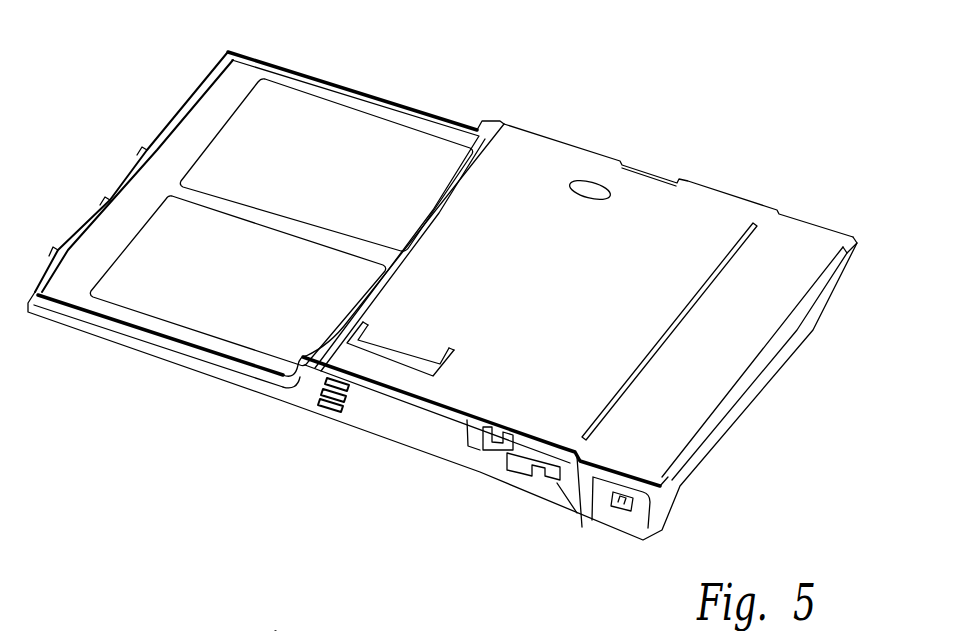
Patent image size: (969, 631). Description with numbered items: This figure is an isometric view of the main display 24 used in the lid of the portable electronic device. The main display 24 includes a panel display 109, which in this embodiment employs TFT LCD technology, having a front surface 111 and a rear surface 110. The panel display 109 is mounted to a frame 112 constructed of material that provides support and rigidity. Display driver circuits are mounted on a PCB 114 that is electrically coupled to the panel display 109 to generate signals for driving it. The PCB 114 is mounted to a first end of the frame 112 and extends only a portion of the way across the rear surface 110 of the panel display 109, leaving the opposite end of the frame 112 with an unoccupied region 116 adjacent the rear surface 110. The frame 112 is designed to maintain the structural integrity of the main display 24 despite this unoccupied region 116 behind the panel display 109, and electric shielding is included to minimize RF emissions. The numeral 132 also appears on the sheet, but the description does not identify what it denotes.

The main display 24 is at (586, 92).
The panel display 109 is at (226, 286).
The rear surface 110 is at (340, 133).
The front surface 111 is at (199, 395).
The frame 112 is at (237, 78).
The PCB 114 is at (622, 178).
The unoccupied region 116 is at (240, 148).
The component 132 is at (275, 630).